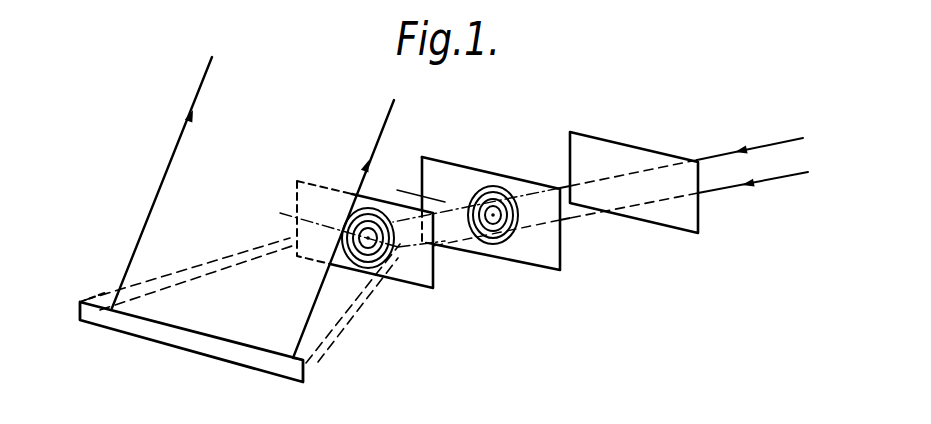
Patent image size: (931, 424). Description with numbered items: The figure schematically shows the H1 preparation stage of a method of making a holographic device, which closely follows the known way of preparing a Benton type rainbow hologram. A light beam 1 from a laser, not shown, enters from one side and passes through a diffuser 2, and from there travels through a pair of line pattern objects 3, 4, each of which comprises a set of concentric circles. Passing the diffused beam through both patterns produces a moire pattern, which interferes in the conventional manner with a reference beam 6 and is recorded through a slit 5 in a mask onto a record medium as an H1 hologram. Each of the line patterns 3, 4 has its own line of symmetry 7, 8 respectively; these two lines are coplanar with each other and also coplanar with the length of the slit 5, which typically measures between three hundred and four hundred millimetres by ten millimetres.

The light beam 1 is at (760, 183).
The diffuser 2 is at (665, 218).
The line pattern object 3 is at (512, 240).
The line pattern object 4 is at (386, 270).
The slit 5 is at (197, 343).
The reference beam 6 is at (170, 160).
The line of symmetry 7 is at (573, 237).
The line of symmetry 8 is at (450, 260).